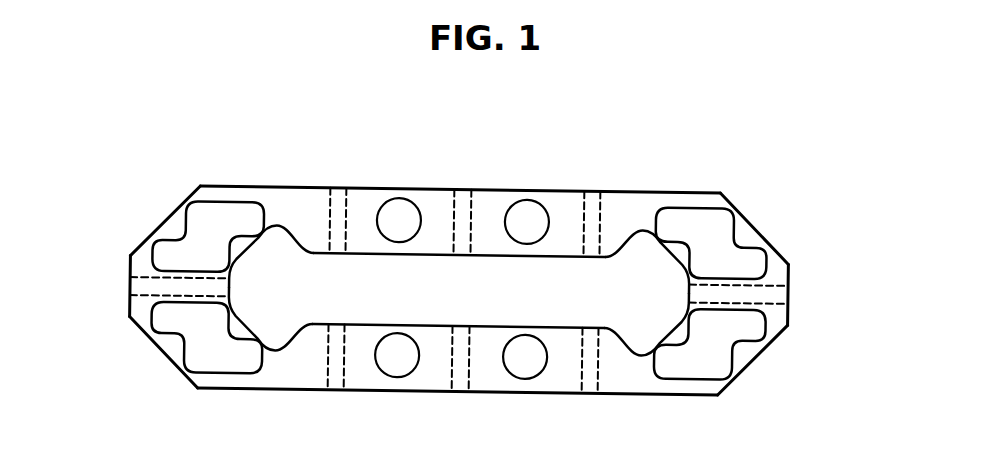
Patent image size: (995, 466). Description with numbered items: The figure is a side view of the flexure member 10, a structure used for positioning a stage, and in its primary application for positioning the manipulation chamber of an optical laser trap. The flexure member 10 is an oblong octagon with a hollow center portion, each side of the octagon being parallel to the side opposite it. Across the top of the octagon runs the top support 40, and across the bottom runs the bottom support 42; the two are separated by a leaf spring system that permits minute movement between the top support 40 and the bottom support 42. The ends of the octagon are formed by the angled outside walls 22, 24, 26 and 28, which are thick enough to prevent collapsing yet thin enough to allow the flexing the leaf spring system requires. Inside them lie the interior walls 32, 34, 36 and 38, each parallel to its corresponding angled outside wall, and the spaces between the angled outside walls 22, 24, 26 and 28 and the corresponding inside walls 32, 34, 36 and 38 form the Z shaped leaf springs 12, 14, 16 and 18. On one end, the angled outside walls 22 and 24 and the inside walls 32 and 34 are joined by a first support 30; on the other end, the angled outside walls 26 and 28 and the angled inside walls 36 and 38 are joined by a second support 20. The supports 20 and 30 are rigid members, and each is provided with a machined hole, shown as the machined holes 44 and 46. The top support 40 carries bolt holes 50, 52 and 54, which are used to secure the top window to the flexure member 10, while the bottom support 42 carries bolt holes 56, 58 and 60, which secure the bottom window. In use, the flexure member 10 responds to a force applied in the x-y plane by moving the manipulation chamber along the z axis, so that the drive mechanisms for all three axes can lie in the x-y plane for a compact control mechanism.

The flexure member 10 is at (700, 183).
The Z shaped leaf spring 12 is at (723, 218).
The Z shaped leaf spring 14 is at (720, 370).
The Z shaped leaf spring 16 is at (198, 358).
The Z shaped leaf spring 18 is at (160, 252).
The second support 20 is at (130, 280).
The angled outside wall 22 is at (760, 237).
The angled outside wall 24 is at (763, 352).
The angled outside wall 26 is at (152, 337).
The angled outside wall 28 is at (182, 205).
The first support 30 is at (788, 292).
The interior wall 32 is at (670, 252).
The interior wall 34 is at (672, 320).
The interior wall 36 is at (243, 318).
The interior wall 38 is at (248, 250).
The top support 40 is at (497, 200).
The bottom support 42 is at (481, 383).
The machined hole 44 is at (778, 297).
The machined hole 46 is at (138, 285).
The bolt hole 50 is at (345, 192).
The bolt hole 52 is at (466, 192).
The bolt hole 54 is at (597, 190).
The bolt hole 56 is at (333, 382).
The bolt hole 58 is at (460, 383).
The bolt hole 60 is at (590, 387).